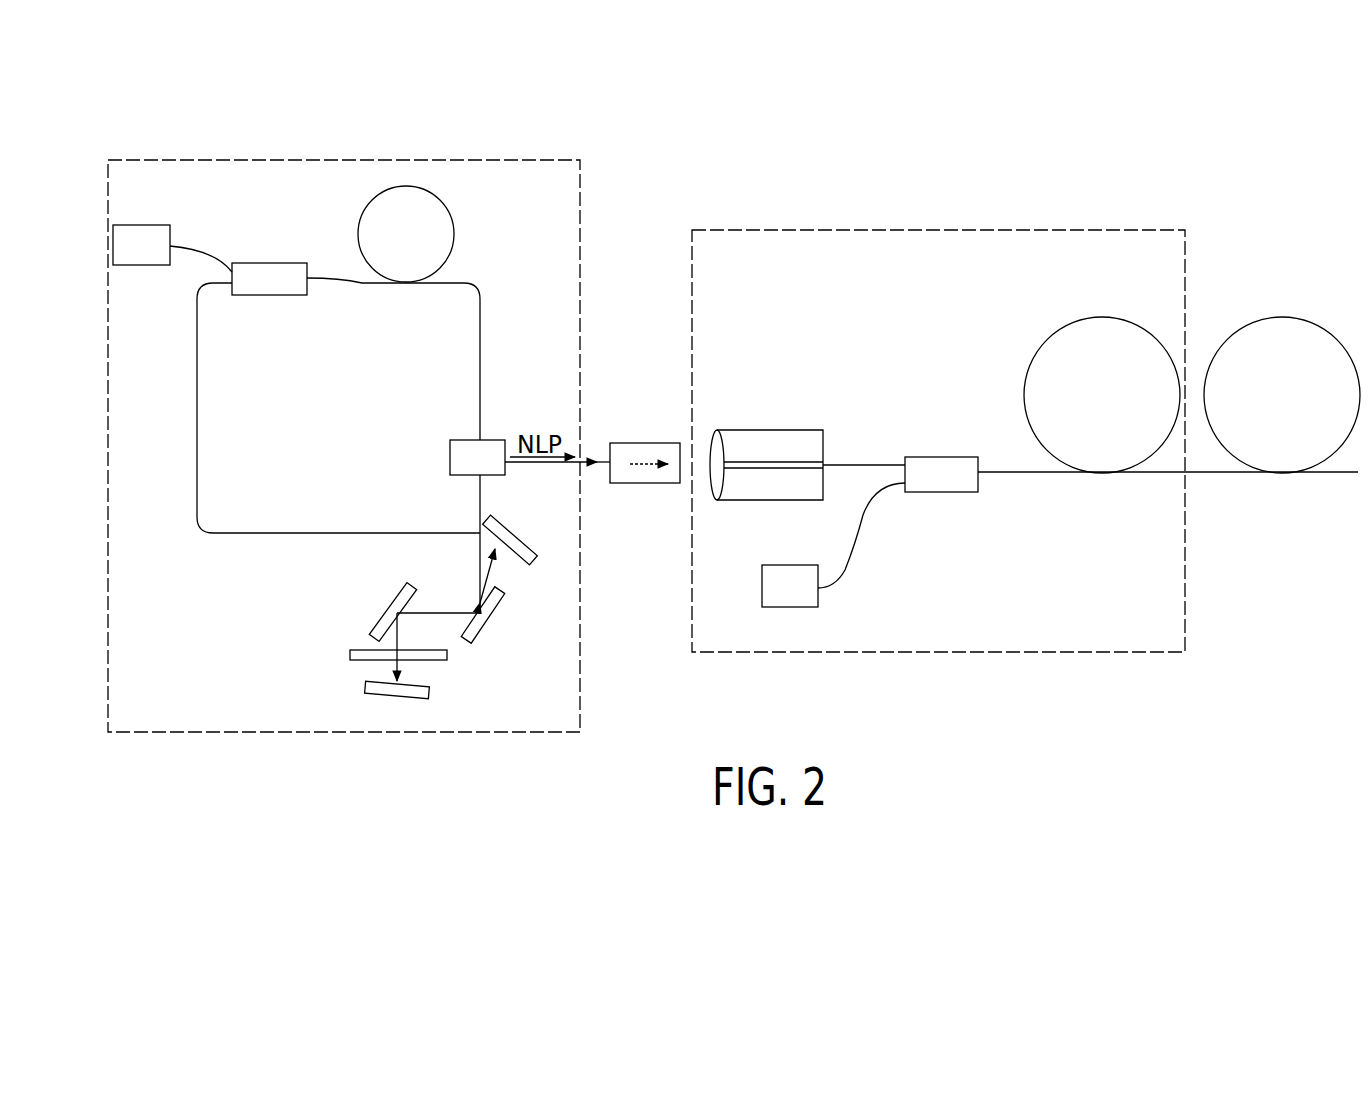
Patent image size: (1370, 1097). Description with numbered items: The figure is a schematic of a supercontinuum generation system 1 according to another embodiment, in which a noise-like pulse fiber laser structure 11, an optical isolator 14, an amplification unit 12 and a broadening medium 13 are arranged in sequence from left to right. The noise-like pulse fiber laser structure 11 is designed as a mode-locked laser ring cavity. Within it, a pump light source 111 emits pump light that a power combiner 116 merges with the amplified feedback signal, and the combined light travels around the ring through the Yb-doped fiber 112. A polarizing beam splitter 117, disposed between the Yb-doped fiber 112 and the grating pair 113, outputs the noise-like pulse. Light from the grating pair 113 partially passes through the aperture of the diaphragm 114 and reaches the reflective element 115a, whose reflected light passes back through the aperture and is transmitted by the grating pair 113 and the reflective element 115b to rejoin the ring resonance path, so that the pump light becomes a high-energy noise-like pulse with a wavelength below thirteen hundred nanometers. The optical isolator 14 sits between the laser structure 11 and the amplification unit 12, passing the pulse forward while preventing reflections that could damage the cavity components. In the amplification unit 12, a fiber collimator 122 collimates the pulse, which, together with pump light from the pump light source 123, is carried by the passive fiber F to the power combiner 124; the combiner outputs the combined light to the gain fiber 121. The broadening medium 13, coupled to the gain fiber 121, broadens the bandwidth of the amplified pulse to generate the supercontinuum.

The supercontinuum generation system 1 is at (457, 95).
The noise-like pulse fiber laser structure 11 is at (212, 158).
The pump light source 111 is at (133, 225).
The Yb-doped fiber 112 is at (452, 232).
The grating pair 113 is at (385, 610).
The diaphragm 114 is at (350, 650).
The reflective element 115a is at (365, 685).
The reflective element 115b is at (522, 548).
The power combiner 116 is at (282, 263).
The polarizing beam splitter 117 is at (465, 440).
The amplification unit 12 is at (791, 228).
The gain fiber 121 is at (1103, 317).
The fiber collimator 122 is at (778, 430).
The pump light source 123 is at (795, 565).
The power combiner 124 is at (940, 457).
The broadening medium 13 is at (1278, 312).
The optical isolator 14 is at (668, 443).
The passive fiber F is at (880, 483).